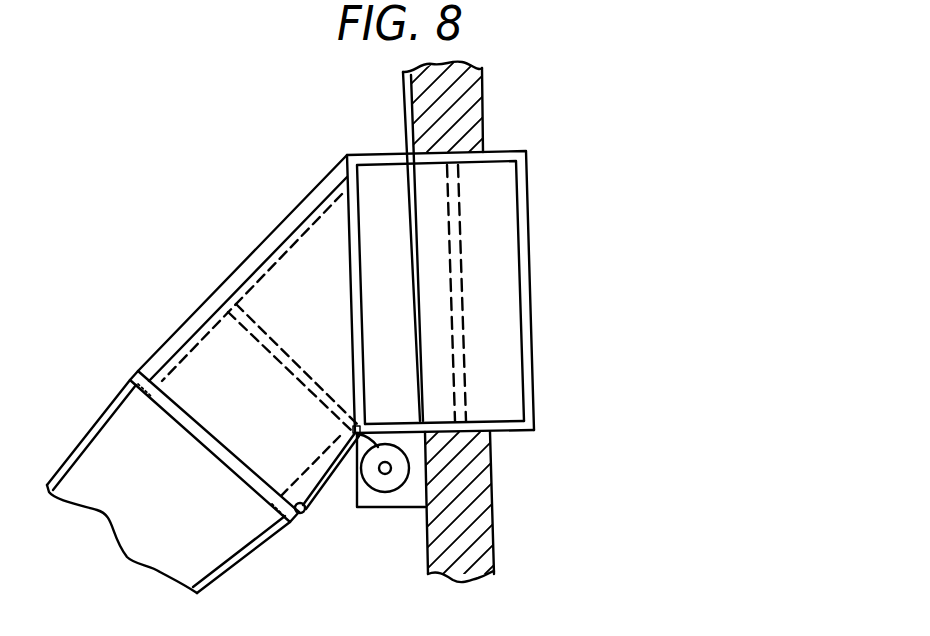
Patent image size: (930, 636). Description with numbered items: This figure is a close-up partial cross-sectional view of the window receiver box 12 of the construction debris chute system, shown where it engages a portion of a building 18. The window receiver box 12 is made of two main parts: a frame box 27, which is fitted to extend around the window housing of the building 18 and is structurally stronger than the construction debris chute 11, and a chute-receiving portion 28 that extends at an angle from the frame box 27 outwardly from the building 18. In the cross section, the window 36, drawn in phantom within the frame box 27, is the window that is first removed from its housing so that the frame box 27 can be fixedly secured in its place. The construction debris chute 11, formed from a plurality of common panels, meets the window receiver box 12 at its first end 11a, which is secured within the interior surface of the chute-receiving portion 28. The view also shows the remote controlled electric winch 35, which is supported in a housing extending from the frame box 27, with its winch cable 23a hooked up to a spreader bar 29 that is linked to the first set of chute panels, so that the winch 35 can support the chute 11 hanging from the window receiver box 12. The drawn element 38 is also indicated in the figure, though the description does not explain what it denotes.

The construction debris chute 11 is at (86, 411).
The first end of the construction debris chute 11a is at (268, 356).
The window receiver box 12 is at (556, 163).
The building 18 is at (495, 522).
The winch cable 23a is at (326, 470).
The frame box 27 is at (559, 319).
The chute-receiving portion 28 is at (196, 272).
The spreader bar 29 is at (303, 514).
The remote controlled electric winch 35 is at (388, 492).
The window 36 is at (462, 237).
The bracket bottom flange 38 is at (463, 433).